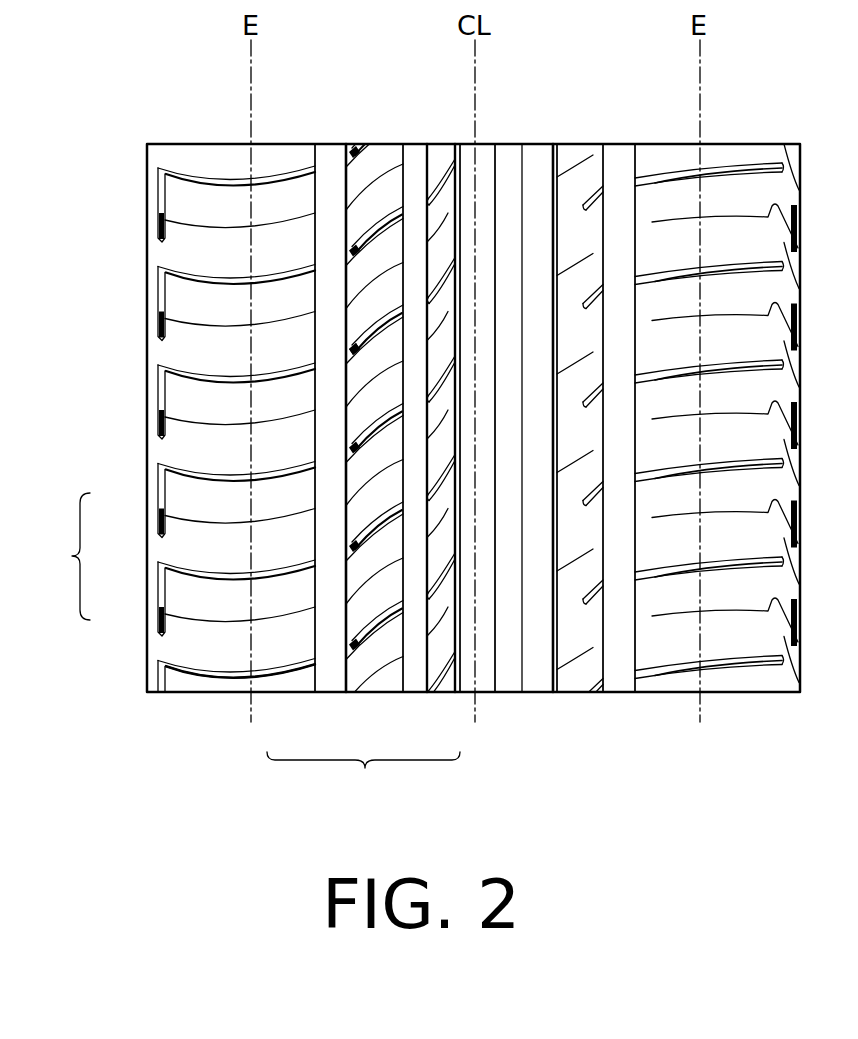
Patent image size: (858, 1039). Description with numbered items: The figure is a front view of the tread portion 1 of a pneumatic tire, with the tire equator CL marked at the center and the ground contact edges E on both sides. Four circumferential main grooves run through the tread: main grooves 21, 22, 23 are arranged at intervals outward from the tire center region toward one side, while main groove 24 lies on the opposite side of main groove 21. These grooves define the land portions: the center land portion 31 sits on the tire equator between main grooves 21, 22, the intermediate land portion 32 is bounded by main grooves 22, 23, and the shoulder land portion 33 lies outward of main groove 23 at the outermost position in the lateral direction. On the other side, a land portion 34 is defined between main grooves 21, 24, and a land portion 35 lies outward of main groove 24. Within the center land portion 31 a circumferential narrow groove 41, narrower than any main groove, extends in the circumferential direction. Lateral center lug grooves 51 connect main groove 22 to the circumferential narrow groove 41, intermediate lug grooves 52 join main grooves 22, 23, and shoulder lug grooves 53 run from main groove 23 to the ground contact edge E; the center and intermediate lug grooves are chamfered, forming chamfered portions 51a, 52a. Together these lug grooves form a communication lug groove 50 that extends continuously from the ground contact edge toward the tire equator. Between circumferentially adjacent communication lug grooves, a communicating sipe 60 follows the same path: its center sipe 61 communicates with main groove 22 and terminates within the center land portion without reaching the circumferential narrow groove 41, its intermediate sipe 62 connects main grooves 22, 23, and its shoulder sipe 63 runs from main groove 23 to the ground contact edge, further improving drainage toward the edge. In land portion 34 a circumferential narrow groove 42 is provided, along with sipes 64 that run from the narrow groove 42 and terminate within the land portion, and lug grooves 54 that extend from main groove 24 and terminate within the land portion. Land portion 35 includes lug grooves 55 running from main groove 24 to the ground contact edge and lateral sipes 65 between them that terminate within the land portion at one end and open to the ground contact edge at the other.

The tread portion 1 is at (740, 104).
The main groove 21 is at (508, 150).
The main groove 22 is at (415, 150).
The main groove 23 is at (327, 150).
The main groove 24 is at (618, 150).
The center land portion 31 is at (483, 150).
The intermediate land portion 32 is at (358, 150).
The shoulder land portion 33 is at (281, 150).
The land portion 34 is at (583, 150).
The land portion 35 is at (665, 150).
The circumferential narrow groove 41 is at (457, 150).
The circumferential narrow groove 42 is at (555, 150).
The communication lug groove 50 is at (363, 776).
The center lug groove 51 is at (440, 660).
The chamfered portion 51a is at (428, 294).
The intermediate lug groove 52 is at (371, 670).
The chamfered portion 52a is at (383, 318).
The shoulder lug groove 53 is at (283, 672).
The lug groove 54 is at (603, 592).
The lug groove 55 is at (672, 676).
The communicating sipe 60 is at (64, 556).
The center sipe 61 is at (436, 526).
The intermediate sipe 62 is at (358, 598).
The shoulder sipe 63 is at (268, 628).
The sipe 64 is at (576, 665).
The sipe 65 is at (683, 614).